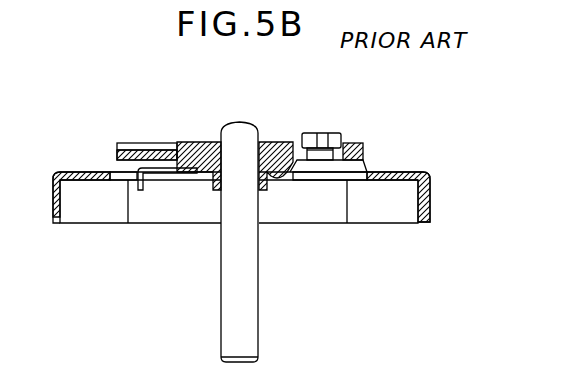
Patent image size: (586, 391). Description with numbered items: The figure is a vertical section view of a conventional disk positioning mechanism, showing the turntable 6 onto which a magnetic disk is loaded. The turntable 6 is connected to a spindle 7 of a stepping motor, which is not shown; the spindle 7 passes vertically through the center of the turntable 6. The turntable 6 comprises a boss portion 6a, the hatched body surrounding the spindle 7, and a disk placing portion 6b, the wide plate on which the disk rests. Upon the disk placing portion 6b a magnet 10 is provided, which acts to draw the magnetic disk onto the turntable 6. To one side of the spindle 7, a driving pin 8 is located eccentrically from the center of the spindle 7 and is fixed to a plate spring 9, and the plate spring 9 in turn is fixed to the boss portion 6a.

The turntable 6 is at (438, 170).
The boss portion 6a is at (278, 142).
The disk placing portion 6b is at (163, 142).
The spindle 7 is at (238, 141).
The driving pin 8 is at (336, 136).
The plate spring 9 is at (367, 152).
The magnet 10 is at (130, 142).